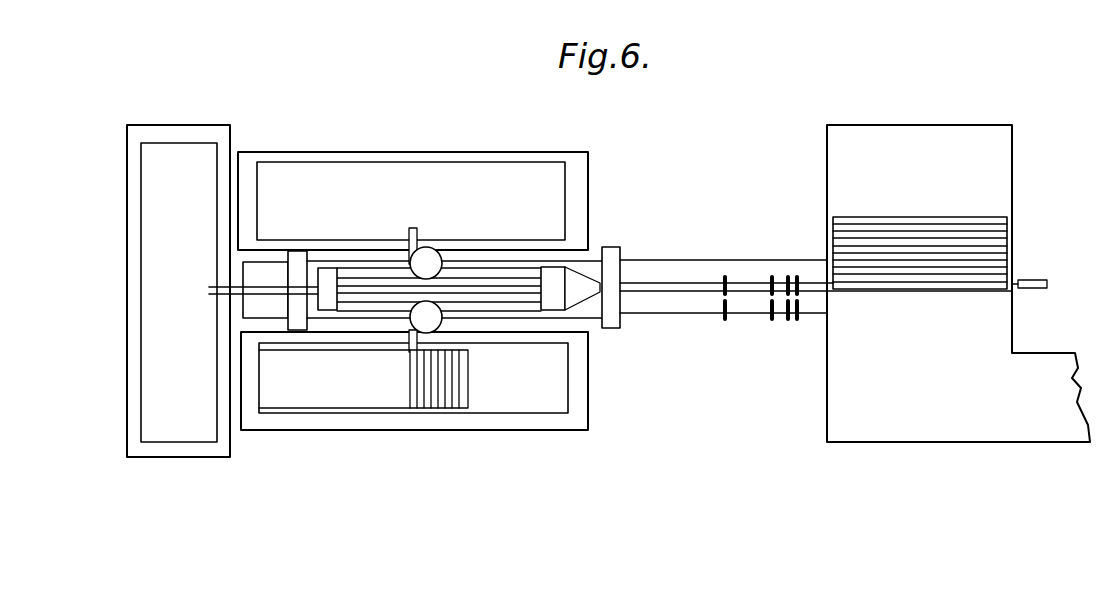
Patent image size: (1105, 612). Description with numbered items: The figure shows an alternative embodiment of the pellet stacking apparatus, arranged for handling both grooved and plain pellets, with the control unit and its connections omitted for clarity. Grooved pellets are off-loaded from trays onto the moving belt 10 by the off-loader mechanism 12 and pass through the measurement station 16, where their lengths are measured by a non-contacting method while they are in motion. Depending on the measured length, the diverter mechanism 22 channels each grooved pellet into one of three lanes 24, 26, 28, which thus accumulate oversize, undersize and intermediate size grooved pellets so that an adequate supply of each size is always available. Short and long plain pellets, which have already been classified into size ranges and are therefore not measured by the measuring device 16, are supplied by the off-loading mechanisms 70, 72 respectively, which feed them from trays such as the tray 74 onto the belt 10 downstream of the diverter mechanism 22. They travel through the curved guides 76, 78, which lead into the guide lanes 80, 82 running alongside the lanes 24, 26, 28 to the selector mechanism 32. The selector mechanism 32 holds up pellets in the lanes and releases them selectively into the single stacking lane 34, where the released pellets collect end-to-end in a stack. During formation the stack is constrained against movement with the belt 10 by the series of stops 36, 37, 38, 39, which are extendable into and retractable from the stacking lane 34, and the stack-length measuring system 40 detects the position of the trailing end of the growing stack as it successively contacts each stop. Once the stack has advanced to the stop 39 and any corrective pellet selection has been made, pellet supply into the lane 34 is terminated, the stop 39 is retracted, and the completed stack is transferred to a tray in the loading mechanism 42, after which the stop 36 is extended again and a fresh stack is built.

The moving belt 10 is at (643, 272).
The off-loader mechanism 12 is at (118, 390).
The measurement station 16 is at (292, 315).
The diverter mechanism 22 is at (326, 272).
The lane 24 is at (475, 280).
The lane 26 is at (498, 287).
The lane 28 is at (518, 296).
The selector mechanism 32 is at (554, 300).
The stacking lane 34 is at (677, 288).
The stop 36 is at (724, 278).
The stop 37 is at (771, 278).
The stop 38 is at (788, 278).
The stop 39 is at (798, 278).
The stack-length measuring system 40 is at (613, 320).
The loading mechanism 42 is at (1036, 194).
The off-loading mechanism 70 is at (436, 128).
The off-loading mechanism 72 is at (373, 448).
The tray 74 is at (469, 396).
The curved guide 76 is at (408, 270).
The curved guide 78 is at (409, 303).
The guide lane 80 is at (463, 267).
The guide lane 82 is at (476, 303).